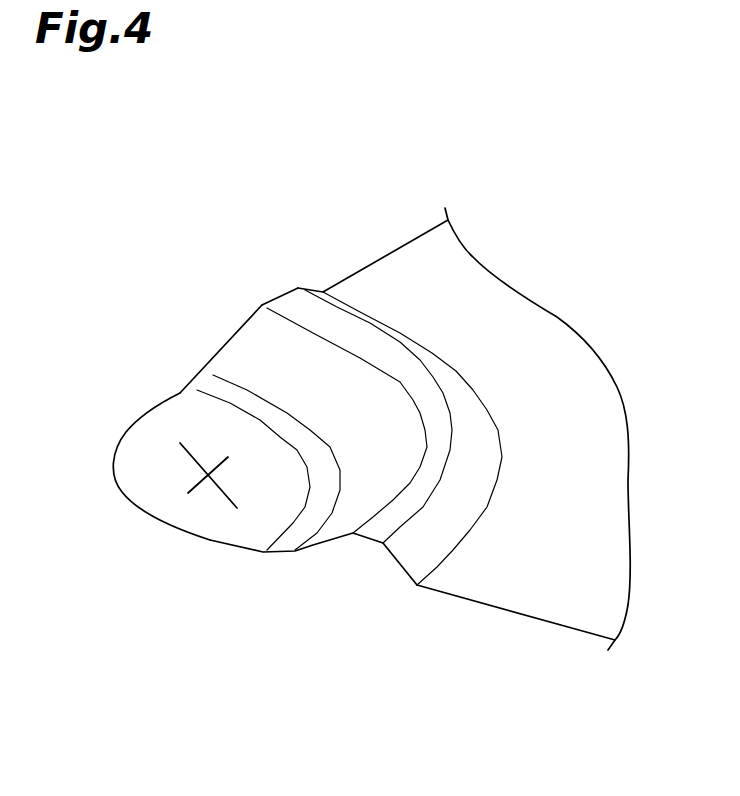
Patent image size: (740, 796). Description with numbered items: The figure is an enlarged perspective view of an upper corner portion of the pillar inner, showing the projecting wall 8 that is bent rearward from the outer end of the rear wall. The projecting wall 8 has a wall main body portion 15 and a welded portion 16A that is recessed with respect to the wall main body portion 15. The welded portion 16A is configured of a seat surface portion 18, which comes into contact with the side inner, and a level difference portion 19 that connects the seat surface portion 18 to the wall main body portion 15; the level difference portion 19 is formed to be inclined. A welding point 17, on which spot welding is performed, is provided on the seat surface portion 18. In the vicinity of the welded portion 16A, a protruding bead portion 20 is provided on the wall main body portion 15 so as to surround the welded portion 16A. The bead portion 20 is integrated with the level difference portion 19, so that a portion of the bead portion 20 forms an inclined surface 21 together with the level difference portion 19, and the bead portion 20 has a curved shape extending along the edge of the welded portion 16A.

The projecting wall 8 is at (567, 318).
The wall main body portion 15 is at (398, 270).
The welded portion 16A is at (185, 291).
The welding point 17 is at (197, 488).
The seat surface portion 18 is at (160, 427).
The level difference portion 19 is at (243, 358).
The bead portion 20 is at (428, 492).
The inclined surface 21 is at (353, 492).